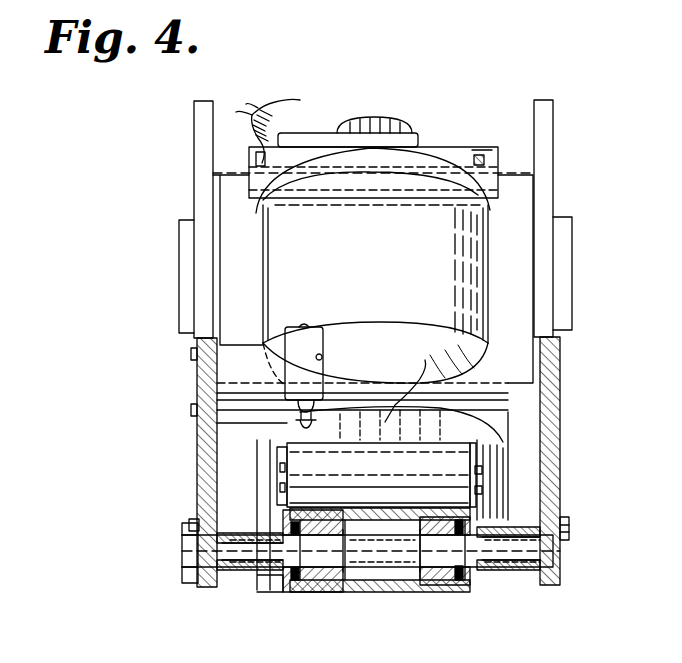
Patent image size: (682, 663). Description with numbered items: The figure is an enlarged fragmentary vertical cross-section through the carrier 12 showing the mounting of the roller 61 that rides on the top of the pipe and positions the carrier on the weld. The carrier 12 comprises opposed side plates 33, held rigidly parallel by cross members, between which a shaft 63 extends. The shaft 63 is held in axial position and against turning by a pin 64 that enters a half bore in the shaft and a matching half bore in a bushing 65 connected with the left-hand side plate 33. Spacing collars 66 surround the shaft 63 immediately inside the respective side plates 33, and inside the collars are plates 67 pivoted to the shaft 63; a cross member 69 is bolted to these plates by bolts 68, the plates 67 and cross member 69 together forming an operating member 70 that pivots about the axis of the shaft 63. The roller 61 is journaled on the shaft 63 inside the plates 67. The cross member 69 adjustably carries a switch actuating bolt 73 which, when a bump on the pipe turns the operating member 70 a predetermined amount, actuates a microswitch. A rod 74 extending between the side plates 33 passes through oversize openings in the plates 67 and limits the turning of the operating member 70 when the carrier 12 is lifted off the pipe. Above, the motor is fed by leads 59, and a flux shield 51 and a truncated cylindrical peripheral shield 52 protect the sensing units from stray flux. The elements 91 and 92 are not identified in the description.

The carrier 12 is at (553, 178).
The side plates 33 is at (197, 382).
The flux shield 51 is at (323, 350).
The peripheral shield 52 is at (405, 381).
The leads 59 is at (272, 126).
The roller 61 is at (390, 592).
The shaft 63 is at (553, 550).
The pin 64 is at (190, 540).
The bushing 65 is at (187, 520).
The spacing collars 66 is at (240, 578).
The plates 67 is at (300, 592).
The bolts 68 is at (482, 470).
The cross member 69 is at (313, 465).
The operating member 70 is at (452, 440).
The switch actuating bolt 73 is at (296, 430).
The rod 74 is at (569, 525).
The container 91 is at (386, 283).
The mounting plate 92 is at (490, 128).